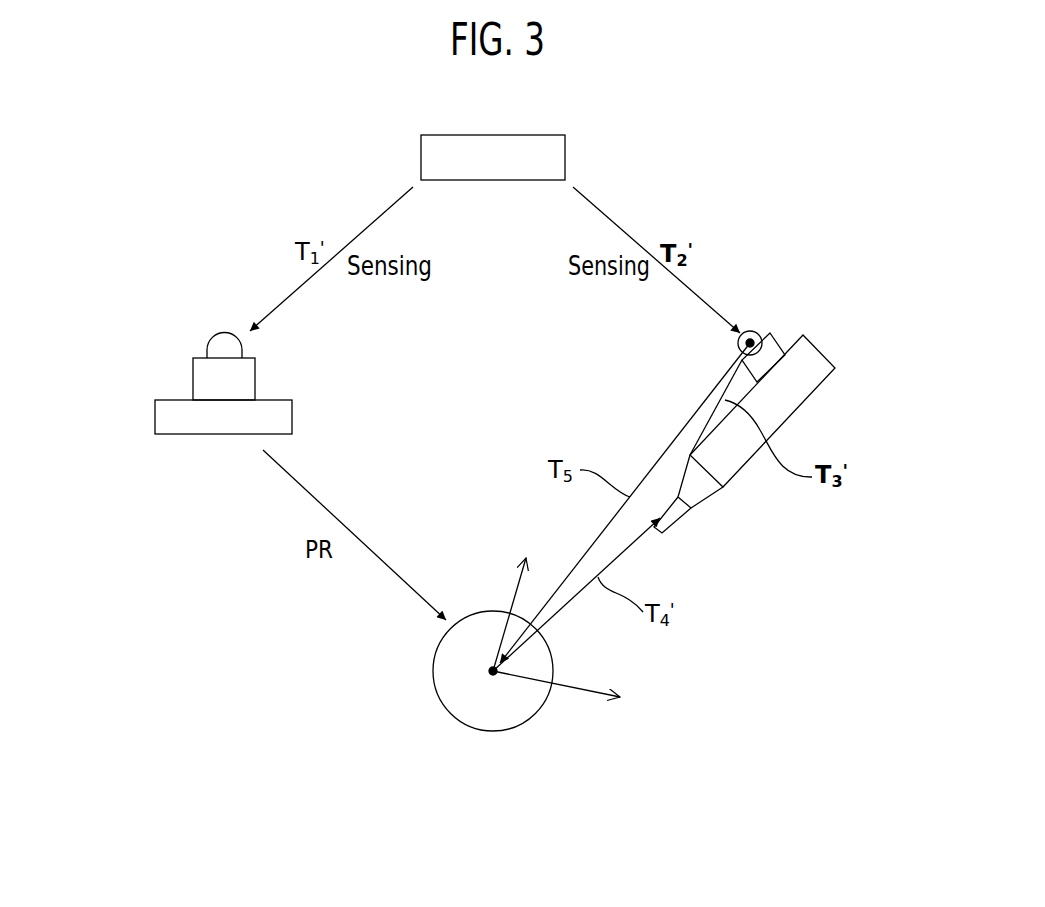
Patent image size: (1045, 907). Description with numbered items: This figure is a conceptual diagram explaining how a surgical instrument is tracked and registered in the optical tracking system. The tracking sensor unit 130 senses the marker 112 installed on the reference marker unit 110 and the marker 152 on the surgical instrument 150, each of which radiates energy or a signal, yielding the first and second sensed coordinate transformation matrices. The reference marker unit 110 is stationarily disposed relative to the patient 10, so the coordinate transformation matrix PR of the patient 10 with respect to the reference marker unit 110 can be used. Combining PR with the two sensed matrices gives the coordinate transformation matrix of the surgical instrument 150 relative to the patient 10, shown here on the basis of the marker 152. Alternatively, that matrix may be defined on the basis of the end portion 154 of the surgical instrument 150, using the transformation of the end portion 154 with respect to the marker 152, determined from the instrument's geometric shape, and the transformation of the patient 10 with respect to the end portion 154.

The patient 10 is at (443, 705).
The reference marker unit 110 is at (161, 364).
The marker 112 is at (193, 365).
The tracking sensor unit 130 is at (565, 155).
The surgical instrument 150 is at (802, 422).
The marker 152 is at (757, 333).
The end portion 154 is at (658, 537).